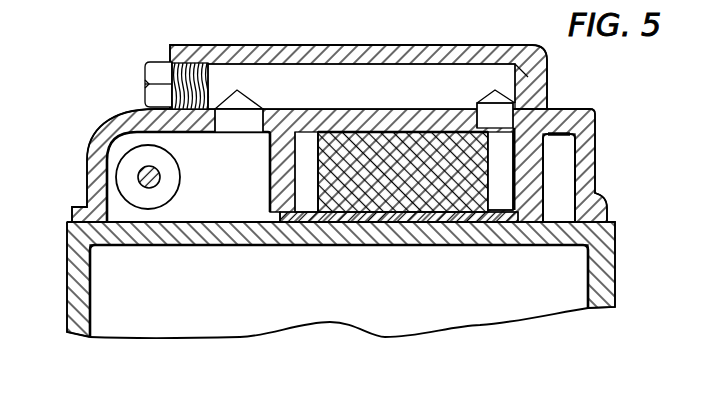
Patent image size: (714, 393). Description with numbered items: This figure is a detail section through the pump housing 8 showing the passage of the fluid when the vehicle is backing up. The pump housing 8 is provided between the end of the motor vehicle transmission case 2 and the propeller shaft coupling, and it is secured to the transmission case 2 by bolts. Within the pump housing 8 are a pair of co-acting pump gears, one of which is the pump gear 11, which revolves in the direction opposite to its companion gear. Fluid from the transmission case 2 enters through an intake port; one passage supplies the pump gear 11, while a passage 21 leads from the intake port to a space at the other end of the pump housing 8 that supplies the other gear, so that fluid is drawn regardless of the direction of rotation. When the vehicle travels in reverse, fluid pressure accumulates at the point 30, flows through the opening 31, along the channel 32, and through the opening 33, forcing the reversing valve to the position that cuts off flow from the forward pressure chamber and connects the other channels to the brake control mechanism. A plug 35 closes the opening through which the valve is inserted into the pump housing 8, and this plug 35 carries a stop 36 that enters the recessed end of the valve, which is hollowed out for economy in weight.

The motor vehicle transmission case 2 is at (70, 267).
The pump housing 8 is at (595, 172).
The pump gear 11 is at (342, 197).
The passage 21 is at (563, 152).
The point 30 is at (515, 148).
The opening 31 is at (490, 117).
The channel 32 is at (358, 77).
The opening 33 is at (238, 123).
The plug 35 is at (133, 193).
The stop 36 is at (140, 178).